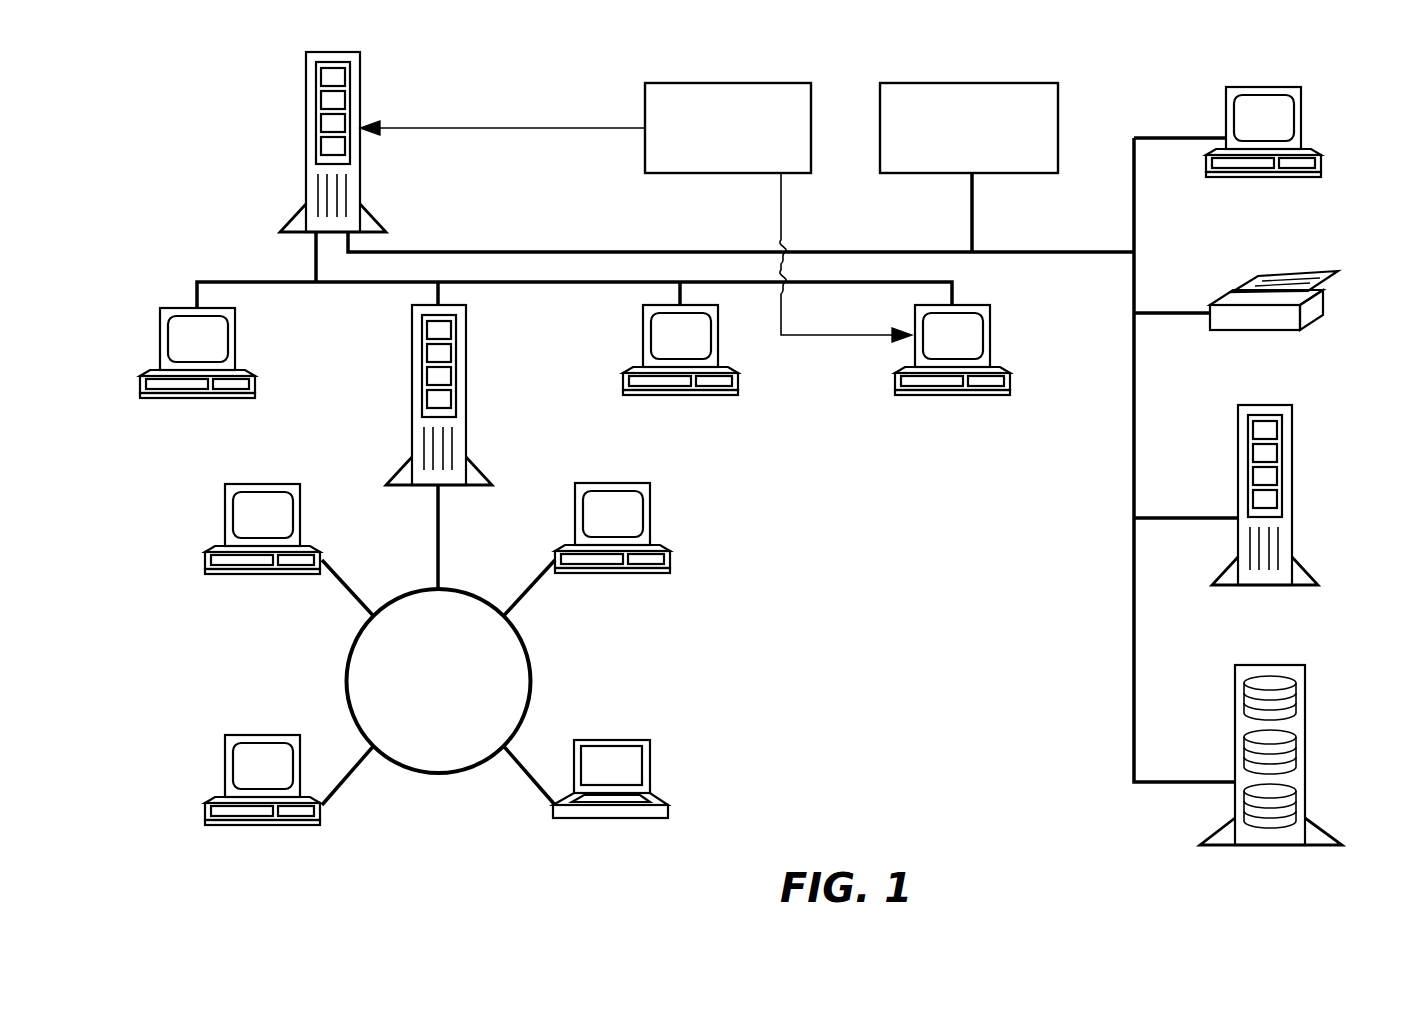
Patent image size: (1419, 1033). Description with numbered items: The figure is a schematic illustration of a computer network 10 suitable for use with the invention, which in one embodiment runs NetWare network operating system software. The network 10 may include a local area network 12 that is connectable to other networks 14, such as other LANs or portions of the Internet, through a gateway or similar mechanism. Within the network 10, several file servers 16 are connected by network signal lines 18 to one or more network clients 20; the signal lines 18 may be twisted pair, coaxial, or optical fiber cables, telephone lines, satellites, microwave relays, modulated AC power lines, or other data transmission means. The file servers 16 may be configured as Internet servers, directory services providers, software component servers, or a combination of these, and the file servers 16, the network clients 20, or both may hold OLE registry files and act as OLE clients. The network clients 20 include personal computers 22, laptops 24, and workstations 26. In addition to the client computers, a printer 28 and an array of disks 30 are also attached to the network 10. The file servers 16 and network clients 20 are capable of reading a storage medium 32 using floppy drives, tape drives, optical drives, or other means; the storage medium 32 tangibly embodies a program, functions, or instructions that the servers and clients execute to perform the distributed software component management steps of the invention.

The computer network 10 is at (228, 150).
The local area network 12 is at (276, 284).
The other networks 14 is at (963, 83).
The file server 16 is at (840, 318).
The network signal line 18 is at (488, 250).
The network client 20 is at (751, 453).
The personal computer 22 is at (302, 510).
The laptop 24 is at (652, 757).
The workstation 26 is at (1294, 492).
The printer 28 is at (1326, 300).
The array of disks 30 is at (1307, 752).
The storage medium 32 is at (718, 83).